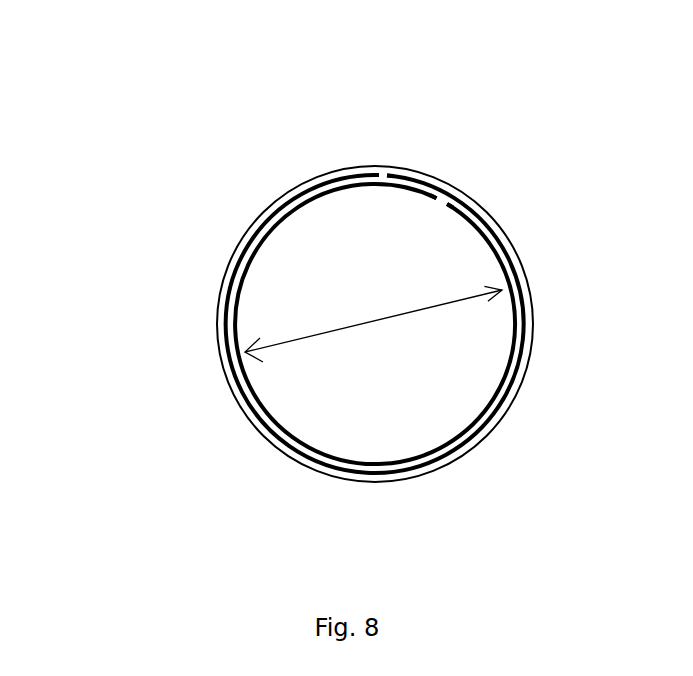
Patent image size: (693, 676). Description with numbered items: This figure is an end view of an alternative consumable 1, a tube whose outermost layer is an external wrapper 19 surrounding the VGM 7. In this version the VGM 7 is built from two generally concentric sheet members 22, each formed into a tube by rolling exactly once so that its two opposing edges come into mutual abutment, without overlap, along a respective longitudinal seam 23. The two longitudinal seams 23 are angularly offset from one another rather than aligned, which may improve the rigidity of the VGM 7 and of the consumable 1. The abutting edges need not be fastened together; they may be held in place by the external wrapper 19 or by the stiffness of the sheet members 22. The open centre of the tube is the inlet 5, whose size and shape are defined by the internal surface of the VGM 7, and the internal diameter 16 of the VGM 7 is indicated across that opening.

The consumable 1 is at (510, 205).
The inlet 5 is at (435, 385).
The VGM 7 is at (495, 243).
The internal diameter 16 is at (337, 330).
The external wrapper 19 is at (235, 242).
The sheet member 22 is at (307, 185).
The longitudinal seam 23 is at (378, 184).